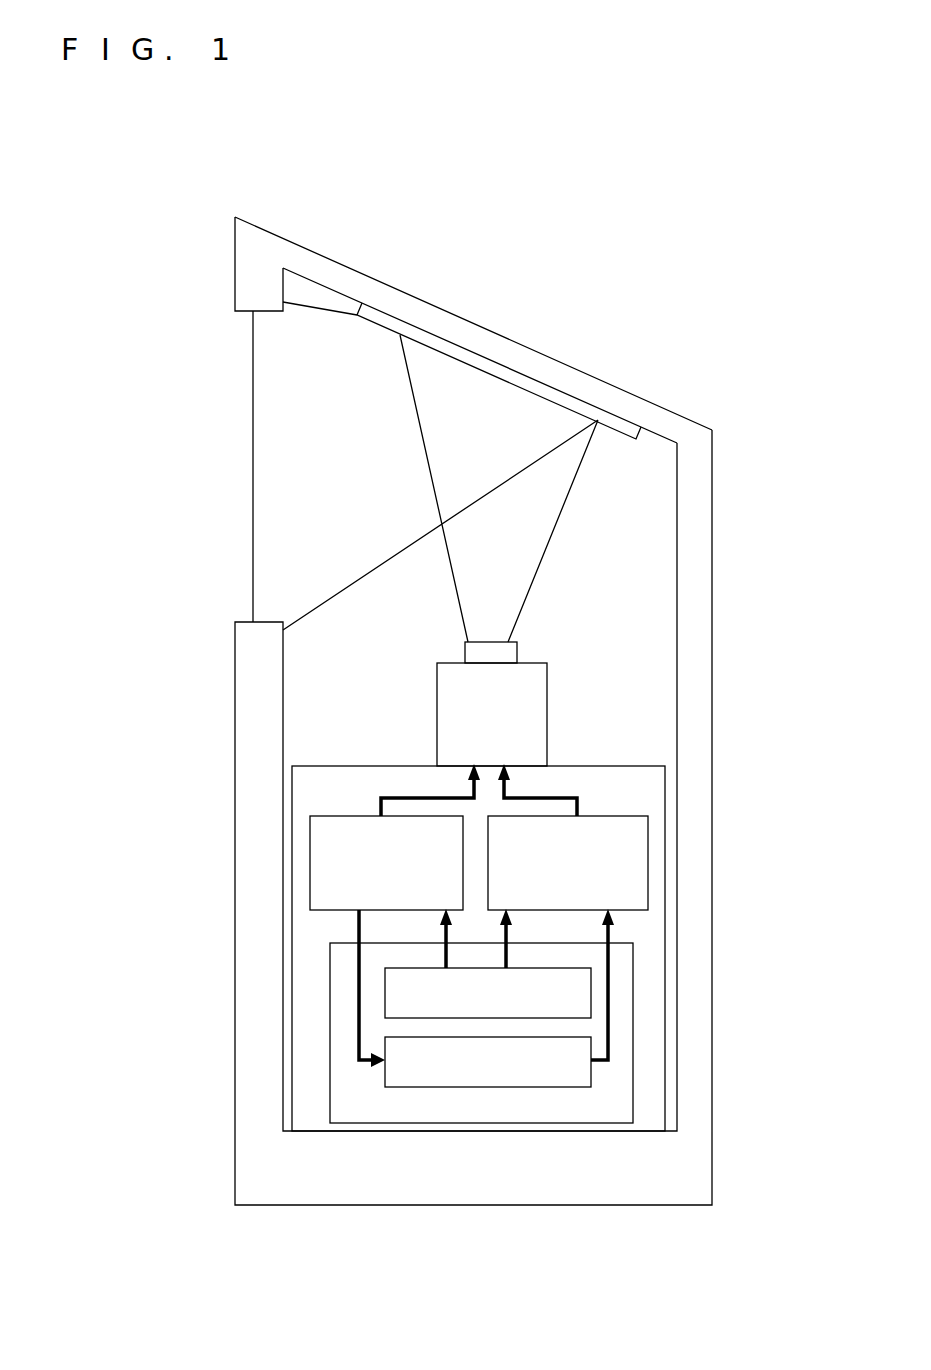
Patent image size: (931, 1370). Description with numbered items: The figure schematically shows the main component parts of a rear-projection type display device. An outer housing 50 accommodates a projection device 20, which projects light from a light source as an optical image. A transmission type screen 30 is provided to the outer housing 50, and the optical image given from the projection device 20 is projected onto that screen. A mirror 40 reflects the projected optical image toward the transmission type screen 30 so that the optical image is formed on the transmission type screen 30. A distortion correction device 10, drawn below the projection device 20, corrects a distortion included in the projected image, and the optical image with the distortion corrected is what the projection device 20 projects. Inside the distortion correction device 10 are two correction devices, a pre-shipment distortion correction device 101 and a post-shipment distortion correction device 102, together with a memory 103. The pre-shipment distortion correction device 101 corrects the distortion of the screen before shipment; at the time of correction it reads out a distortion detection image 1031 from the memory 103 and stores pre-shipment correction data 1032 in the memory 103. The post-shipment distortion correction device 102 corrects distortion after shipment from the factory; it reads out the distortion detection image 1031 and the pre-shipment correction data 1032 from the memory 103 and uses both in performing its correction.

The distortion correction device 10 is at (369, 766).
The projection device 20 is at (547, 700).
The transmission type screen 30 is at (250, 360).
The mirror 40 is at (532, 395).
The outer housing 50 is at (368, 294).
The pre-shipment distortion correction device 101 is at (310, 860).
The post-shipment distortion correction device 102 is at (648, 857).
The memory 103 is at (633, 1030).
The distortion detection image 1031 is at (591, 975).
The pre-shipment correction data 1032 is at (591, 1073).